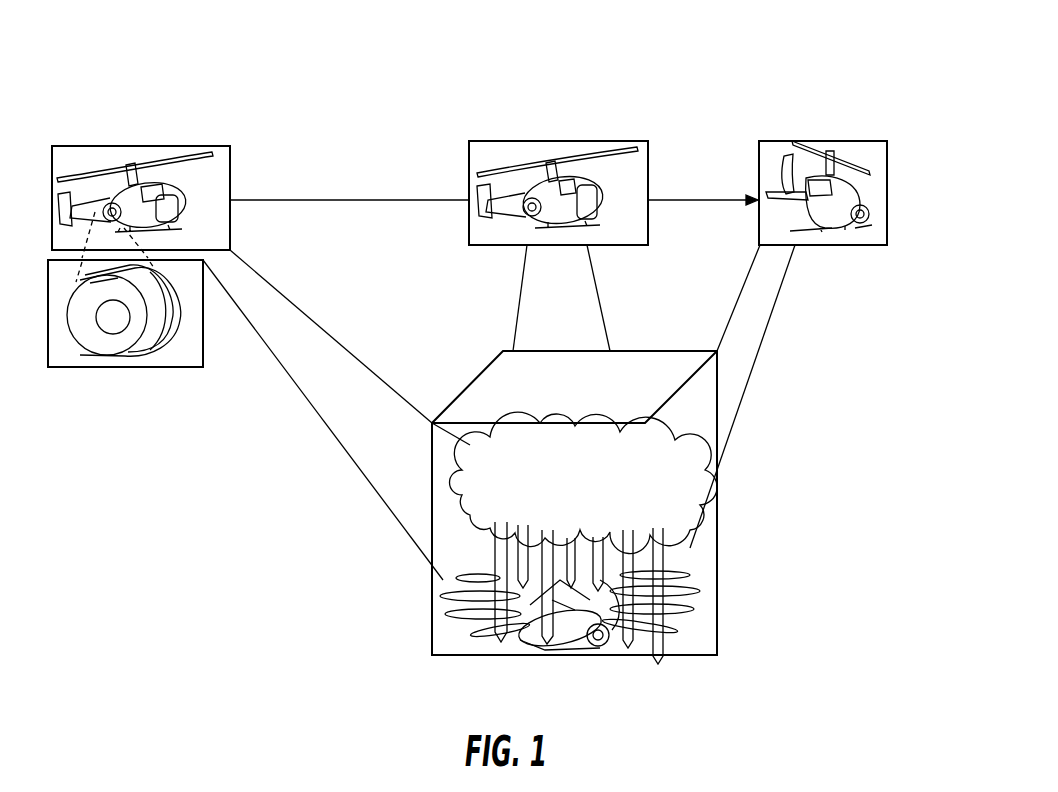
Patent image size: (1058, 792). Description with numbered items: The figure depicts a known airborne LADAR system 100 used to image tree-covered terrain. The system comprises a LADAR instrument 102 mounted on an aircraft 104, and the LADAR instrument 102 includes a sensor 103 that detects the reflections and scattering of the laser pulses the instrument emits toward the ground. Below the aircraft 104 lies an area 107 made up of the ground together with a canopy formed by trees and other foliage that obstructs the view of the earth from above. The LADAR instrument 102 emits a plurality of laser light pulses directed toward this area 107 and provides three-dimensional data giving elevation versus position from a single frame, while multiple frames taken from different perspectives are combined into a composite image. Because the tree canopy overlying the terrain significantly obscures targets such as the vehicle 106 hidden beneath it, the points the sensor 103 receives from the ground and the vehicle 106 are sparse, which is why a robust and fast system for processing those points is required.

The airborne LADAR system 100 is at (354, 158).
The LADAR instrument 102 is at (840, 213).
The sensor 103 is at (113, 322).
The aircraft 104 is at (160, 184).
The vehicle 106 is at (600, 622).
The area 107 is at (480, 377).